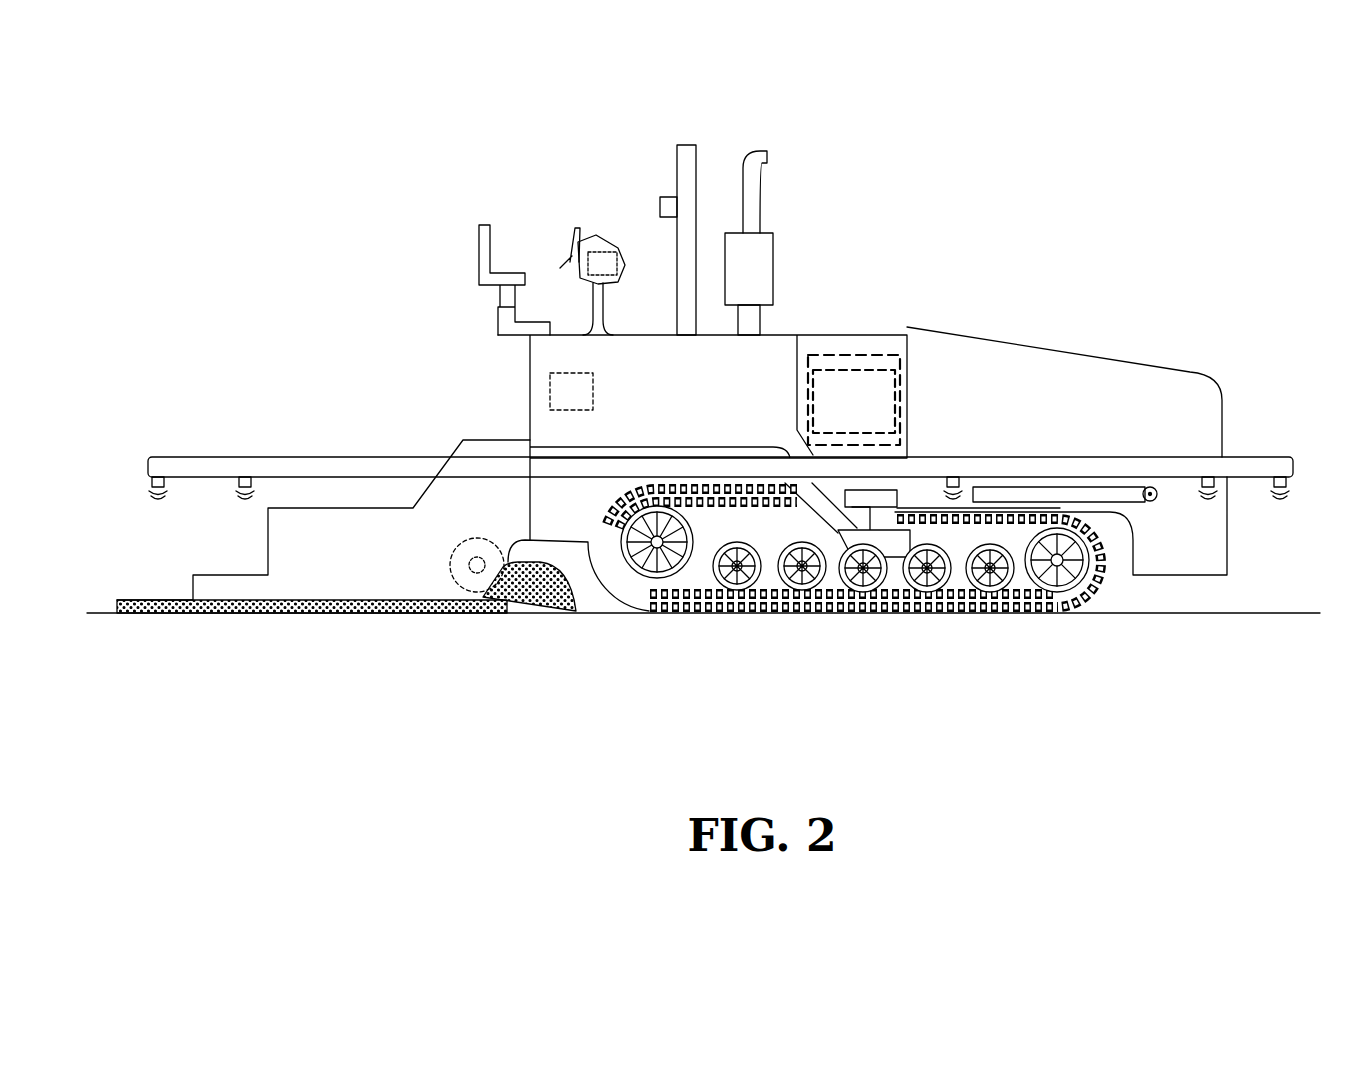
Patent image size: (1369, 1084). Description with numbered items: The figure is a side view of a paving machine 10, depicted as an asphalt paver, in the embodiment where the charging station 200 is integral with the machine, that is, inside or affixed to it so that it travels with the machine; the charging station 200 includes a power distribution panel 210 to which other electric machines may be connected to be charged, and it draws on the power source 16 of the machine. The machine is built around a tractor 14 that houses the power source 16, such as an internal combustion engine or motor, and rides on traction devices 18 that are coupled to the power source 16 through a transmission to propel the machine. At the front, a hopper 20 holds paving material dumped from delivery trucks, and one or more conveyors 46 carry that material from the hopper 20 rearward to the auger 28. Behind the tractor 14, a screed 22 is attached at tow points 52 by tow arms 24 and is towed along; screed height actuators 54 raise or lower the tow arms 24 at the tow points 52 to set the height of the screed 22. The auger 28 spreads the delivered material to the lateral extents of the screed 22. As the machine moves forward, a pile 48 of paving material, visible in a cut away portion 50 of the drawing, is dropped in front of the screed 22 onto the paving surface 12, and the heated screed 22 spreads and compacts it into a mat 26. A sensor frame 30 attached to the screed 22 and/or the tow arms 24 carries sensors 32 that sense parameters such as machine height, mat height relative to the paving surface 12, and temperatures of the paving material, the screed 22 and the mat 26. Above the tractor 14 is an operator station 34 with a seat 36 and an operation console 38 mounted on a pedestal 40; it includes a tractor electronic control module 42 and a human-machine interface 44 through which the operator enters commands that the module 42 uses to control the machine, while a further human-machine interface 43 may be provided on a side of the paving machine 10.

The paving machine 10 is at (717, 412).
The paving surface 12 is at (107, 613).
The tractor 14 is at (530, 378).
The power source 16 is at (750, 409).
The traction devices 18 is at (1093, 598).
The hopper 20 is at (1147, 397).
The screed 22 is at (318, 578).
The tow arms 24 is at (871, 586).
The mat 26 is at (210, 613).
The auger 28 is at (455, 560).
The sensor frame 30 is at (1047, 457).
The sensors 32 is at (154, 504).
The operator station 34 is at (455, 190).
The seat 36 is at (479, 252).
The operation console 38 is at (604, 236).
The pedestal 40 is at (603, 300).
The tractor electronic control module 42 is at (620, 265).
The human-machine interface 43 is at (598, 392).
The human-machine interface 44 is at (573, 265).
The conveyors 46 is at (1165, 507).
The pile 48 is at (525, 590).
The cut away portion 50 is at (652, 661).
The tow points 52 is at (884, 548).
The screed height actuators 54 is at (904, 532).
The charging station 200 is at (853, 350).
The power distribution panel 210 is at (877, 370).